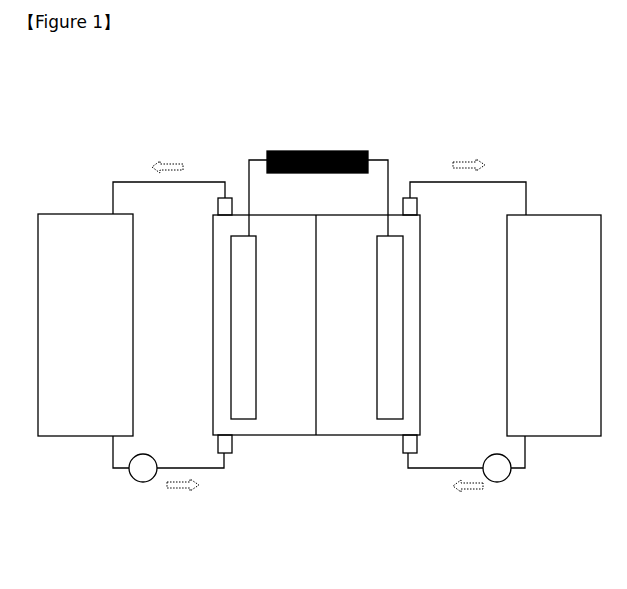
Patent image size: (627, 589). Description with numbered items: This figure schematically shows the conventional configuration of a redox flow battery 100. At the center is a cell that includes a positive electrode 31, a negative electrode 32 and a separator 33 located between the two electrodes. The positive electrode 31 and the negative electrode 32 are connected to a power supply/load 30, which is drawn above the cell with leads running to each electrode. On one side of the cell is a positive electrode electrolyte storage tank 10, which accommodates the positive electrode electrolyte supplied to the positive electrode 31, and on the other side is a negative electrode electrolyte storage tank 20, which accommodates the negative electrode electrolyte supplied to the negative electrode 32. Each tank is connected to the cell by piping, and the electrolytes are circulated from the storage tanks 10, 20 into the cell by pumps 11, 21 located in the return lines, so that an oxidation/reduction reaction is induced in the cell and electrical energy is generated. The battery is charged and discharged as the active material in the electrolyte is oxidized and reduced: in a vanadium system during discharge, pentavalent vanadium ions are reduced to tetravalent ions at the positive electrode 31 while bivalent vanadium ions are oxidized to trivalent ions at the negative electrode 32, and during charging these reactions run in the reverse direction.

The positive electrode electrolyte storage tank 10 is at (63, 214).
The pump 11 is at (146, 482).
The negative electrode electrolyte storage tank 20 is at (578, 215).
The pump 21 is at (500, 482).
The power supply/load 30 is at (316, 150).
The positive electrode 31 is at (250, 420).
The negative electrode 32 is at (393, 420).
The separator 33 is at (316, 435).
The redox flow battery 100 is at (343, 583).